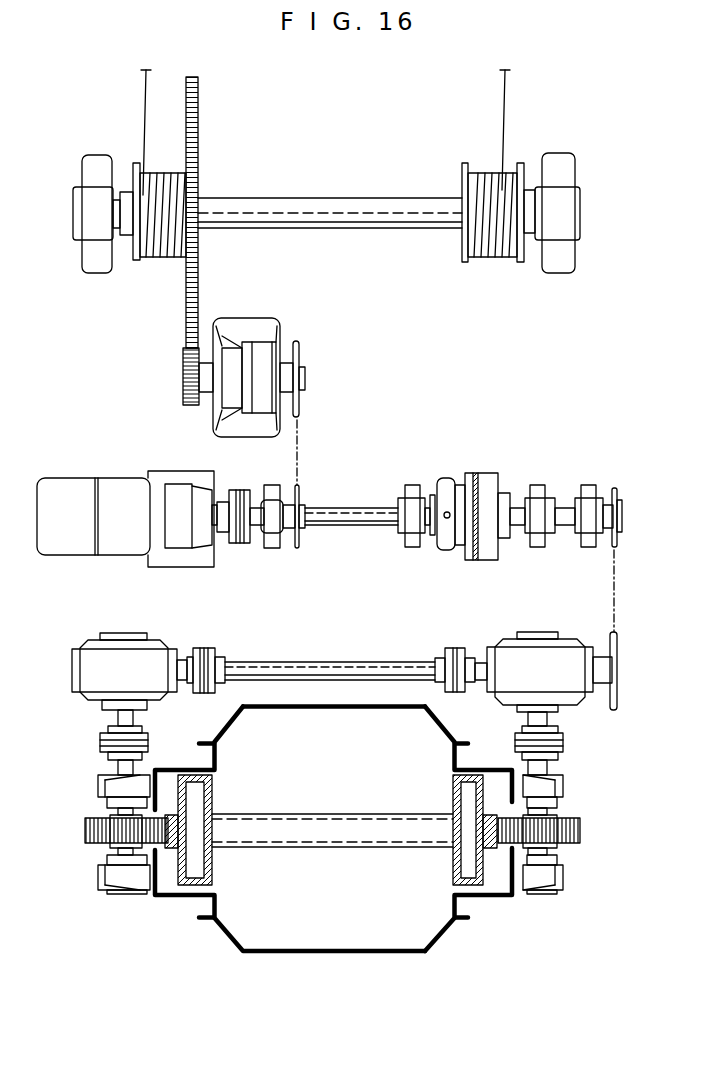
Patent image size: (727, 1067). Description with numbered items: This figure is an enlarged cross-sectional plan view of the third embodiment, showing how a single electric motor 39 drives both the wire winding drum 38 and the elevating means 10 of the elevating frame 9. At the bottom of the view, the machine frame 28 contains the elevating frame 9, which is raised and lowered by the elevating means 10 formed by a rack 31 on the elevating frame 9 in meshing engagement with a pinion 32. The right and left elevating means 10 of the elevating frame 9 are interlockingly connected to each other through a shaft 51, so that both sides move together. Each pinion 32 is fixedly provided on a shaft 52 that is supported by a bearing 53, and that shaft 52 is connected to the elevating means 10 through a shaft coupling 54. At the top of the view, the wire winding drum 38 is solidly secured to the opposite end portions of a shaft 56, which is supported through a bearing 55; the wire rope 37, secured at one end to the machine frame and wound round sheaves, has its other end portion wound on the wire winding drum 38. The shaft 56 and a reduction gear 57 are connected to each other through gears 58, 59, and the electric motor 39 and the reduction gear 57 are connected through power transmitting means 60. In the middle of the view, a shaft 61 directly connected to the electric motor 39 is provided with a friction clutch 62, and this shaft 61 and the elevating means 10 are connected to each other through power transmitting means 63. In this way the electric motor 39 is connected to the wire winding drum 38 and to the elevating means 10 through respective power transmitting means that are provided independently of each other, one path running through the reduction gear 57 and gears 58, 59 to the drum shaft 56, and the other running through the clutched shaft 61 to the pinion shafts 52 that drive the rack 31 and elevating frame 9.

The elevating frame 9 is at (455, 852).
The elevating means 10 is at (505, 652).
The machine frame 28 is at (216, 925).
The rack 31 is at (175, 845).
The pinion 32 is at (88, 822).
The wire rope 37 is at (505, 122).
The wire winding drum 38 is at (475, 175).
The electric motor 39 is at (135, 482).
The shaft 51 is at (333, 662).
The shaft 52 is at (556, 808).
The bearing 53 is at (100, 875).
The shaft coupling 54 is at (100, 742).
The bearing 55 is at (560, 270).
The shaft 56 is at (330, 200).
The reduction gear 57 is at (247, 320).
The gear 58 is at (198, 153).
The gear 59 is at (185, 368).
The power transmitting means 60 is at (300, 470).
The shaft 61 is at (350, 508).
The friction clutch 62 is at (488, 478).
The power transmitting means 63 is at (616, 560).